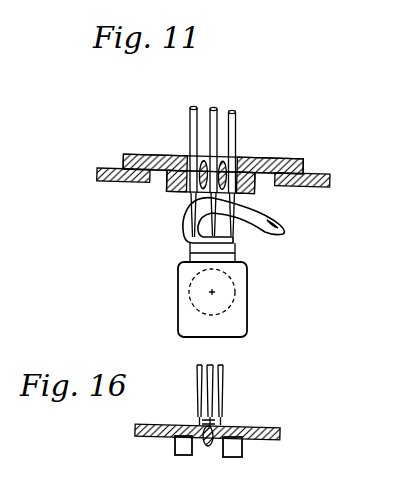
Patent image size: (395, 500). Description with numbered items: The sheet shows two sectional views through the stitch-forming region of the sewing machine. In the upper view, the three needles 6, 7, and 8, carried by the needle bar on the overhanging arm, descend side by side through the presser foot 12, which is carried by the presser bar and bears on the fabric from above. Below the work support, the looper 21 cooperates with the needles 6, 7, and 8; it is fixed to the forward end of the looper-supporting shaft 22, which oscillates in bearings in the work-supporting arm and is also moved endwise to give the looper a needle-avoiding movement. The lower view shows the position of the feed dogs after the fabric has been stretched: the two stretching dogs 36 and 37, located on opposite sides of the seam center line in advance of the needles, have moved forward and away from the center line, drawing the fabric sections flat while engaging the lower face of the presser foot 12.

In FIG. 11, the needle 6 is at (192, 106).
In FIG. 16, the needle 6 is at (197, 377).
In FIG. 11, the needle 7 is at (215, 108).
In FIG. 16, the needle 7 is at (212, 368).
In FIG. 11, the needle 8 is at (237, 112).
In FIG. 16, the needle 8 is at (224, 377).
In FIG. 11, the presser foot 12 is at (290, 151).
In FIG. 11, the looper 21 is at (250, 210).
In FIG. 11, the looper-supporting shaft 22 is at (227, 292).
In FIG. 16, the stretching dog 36 is at (233, 448).
In FIG. 16, the stretching dog 37 is at (178, 450).